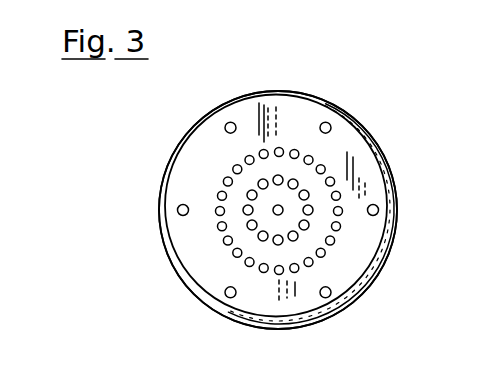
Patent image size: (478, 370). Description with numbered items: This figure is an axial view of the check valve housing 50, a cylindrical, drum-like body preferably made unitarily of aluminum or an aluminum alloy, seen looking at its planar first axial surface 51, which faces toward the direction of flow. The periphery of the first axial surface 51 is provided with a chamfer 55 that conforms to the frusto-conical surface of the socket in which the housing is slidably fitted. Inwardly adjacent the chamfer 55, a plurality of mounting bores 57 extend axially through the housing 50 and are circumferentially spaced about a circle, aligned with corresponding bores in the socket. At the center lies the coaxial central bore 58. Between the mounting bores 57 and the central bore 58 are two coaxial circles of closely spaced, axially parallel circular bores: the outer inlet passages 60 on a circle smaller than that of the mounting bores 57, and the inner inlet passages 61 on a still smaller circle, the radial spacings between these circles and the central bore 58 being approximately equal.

The housing 50 is at (397, 231).
The first axial surface 51 is at (213, 263).
The chamfer 55 is at (163, 240).
The mounting bores 57 is at (183, 204).
The central bore 58 is at (273, 214).
The outer inlet passages 60 is at (343, 211).
The inner inlet passages 61 is at (294, 240).